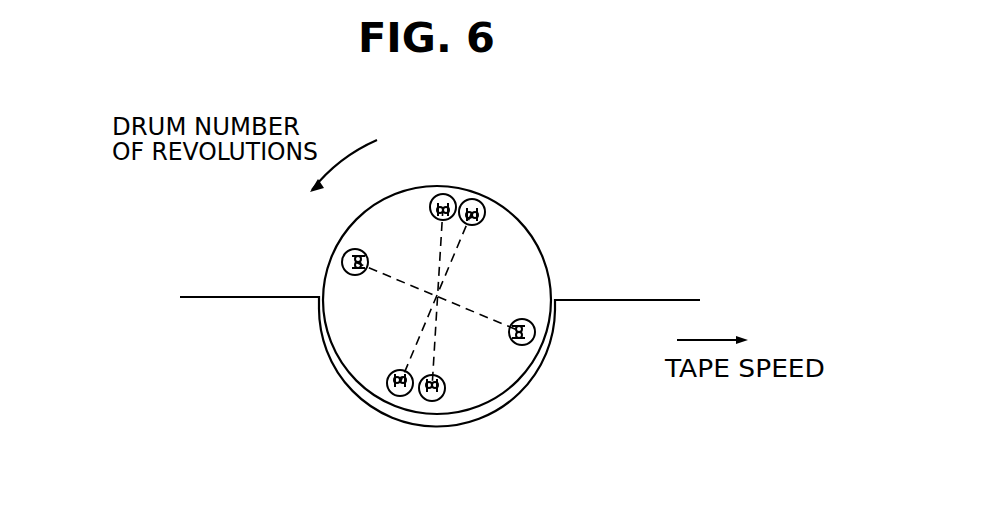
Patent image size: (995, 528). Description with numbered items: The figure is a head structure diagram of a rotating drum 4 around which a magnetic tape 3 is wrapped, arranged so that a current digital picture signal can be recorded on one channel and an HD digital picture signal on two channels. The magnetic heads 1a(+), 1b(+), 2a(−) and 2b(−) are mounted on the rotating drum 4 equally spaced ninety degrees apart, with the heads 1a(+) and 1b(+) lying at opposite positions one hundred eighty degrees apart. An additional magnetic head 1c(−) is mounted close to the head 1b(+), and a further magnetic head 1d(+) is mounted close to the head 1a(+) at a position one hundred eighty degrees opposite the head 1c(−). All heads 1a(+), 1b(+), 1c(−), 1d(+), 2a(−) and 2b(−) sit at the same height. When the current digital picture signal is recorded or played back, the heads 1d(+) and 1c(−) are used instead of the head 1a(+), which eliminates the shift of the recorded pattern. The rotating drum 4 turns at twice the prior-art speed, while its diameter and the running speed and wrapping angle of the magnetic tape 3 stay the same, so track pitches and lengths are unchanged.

The magnetic tape 3 is at (648, 293).
The rotating drum 4 is at (347, 334).
The magnetic head 1a(+) 1a is at (498, 213).
The magnetic head 1b(+) 1b is at (388, 400).
The magnetic head 1c(−) 1c is at (447, 402).
The magnetic head 1d(+) 1d is at (440, 193).
The magnetic head 2a(−) 2a is at (343, 270).
The magnetic head 2b(−) 2b is at (522, 347).